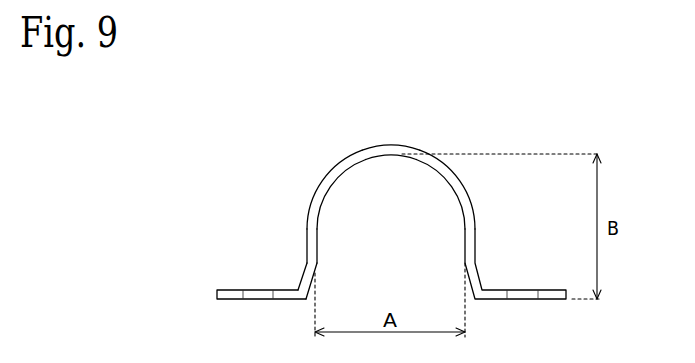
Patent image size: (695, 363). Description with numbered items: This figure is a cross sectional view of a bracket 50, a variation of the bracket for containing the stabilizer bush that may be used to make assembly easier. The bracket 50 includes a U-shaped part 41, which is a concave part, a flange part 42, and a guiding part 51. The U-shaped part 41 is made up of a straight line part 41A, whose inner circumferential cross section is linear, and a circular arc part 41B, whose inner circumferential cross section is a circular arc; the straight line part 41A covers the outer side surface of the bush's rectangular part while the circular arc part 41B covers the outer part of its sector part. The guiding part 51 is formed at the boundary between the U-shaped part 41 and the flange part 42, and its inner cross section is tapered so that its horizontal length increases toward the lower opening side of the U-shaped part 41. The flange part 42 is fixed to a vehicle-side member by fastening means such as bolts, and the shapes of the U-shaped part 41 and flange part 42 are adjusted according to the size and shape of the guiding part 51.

The bracket 50 is at (464, 133).
The U-shaped part 41 is at (331, 177).
The straight line part 41A is at (307, 247).
The circular arc part 41B is at (374, 152).
The flange part 42 is at (230, 290).
The guiding part 51 is at (310, 297).